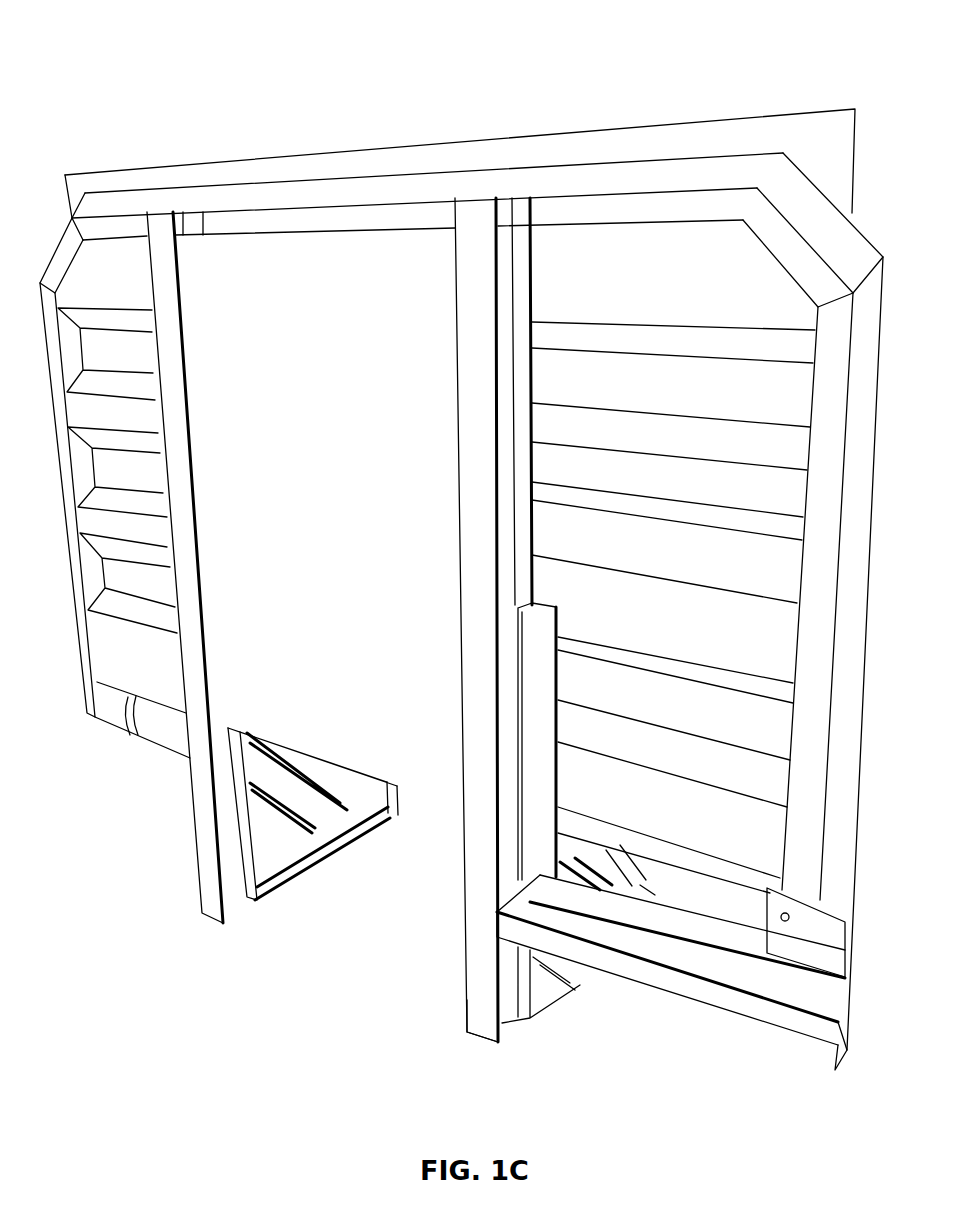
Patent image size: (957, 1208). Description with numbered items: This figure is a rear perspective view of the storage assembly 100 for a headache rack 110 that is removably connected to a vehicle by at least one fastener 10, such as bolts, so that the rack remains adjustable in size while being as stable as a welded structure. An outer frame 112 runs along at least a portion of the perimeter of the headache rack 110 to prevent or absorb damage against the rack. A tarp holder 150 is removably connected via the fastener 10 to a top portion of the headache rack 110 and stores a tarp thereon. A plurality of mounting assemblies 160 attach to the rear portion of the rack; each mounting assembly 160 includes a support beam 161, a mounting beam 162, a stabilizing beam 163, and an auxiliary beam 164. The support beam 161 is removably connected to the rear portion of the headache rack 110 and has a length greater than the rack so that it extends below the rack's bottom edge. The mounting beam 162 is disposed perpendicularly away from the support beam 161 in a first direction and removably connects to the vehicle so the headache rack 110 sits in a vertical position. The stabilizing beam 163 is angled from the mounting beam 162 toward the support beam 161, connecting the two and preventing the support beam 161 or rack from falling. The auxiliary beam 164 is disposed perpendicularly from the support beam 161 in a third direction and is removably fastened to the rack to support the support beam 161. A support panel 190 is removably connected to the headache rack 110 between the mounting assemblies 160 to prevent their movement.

The storage assembly 100 is at (540, 38).
The fastener 10 is at (490, 1012).
The headache rack 110 is at (105, 262).
The outer frame 112 is at (597, 207).
The tarp holder 150 is at (273, 172).
The mounting assembly 160 is at (272, 898).
The support beam 161 is at (195, 763).
The mounting beam 162 is at (312, 843).
The stabilizing beam 163 is at (310, 800).
The auxiliary beam 164 is at (715, 1013).
The support panel 190 is at (320, 713).